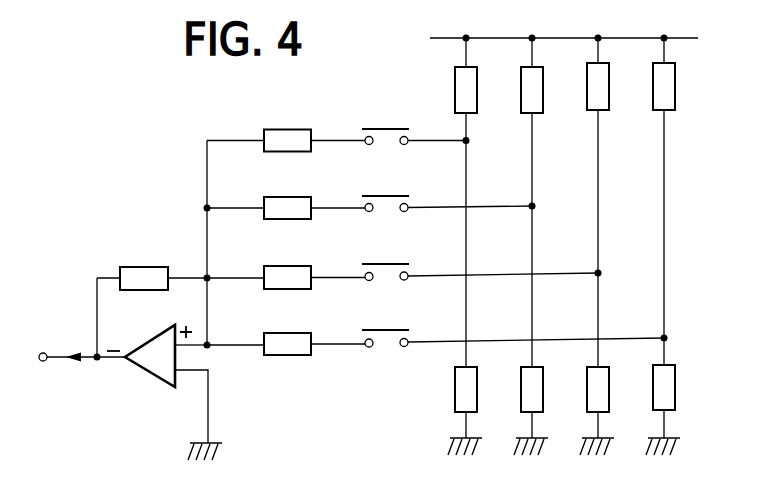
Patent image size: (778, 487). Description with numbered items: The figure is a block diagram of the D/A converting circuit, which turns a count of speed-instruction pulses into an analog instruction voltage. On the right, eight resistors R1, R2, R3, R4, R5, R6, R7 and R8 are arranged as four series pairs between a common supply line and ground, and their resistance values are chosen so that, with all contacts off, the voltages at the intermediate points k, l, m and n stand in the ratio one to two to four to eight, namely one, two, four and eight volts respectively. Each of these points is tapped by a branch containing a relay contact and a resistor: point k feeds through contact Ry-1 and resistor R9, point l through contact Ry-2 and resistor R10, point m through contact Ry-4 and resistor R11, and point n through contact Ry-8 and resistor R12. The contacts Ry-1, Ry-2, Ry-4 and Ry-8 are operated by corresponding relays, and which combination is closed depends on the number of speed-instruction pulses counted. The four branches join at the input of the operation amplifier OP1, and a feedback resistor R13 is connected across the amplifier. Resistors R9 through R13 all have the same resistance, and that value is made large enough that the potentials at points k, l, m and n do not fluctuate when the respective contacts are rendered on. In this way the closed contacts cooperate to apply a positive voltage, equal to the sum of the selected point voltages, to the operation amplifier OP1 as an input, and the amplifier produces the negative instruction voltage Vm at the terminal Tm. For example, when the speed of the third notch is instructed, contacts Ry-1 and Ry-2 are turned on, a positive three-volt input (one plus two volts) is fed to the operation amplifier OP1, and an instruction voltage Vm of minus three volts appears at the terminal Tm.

The resistor R1 is at (451, 90).
The resistor R2 is at (451, 389).
The resistor R3 is at (517, 90).
The resistor R4 is at (517, 389).
The resistor R5 is at (582, 86).
The resistor R6 is at (583, 389).
The resistor R7 is at (648, 86).
The resistor R8 is at (648, 387).
The resistor R9 is at (286, 129).
The resistor R10 is at (286, 196).
The resistor R11 is at (286, 266).
The resistor R12 is at (286, 332).
The resistor R13 is at (152, 300).
The contact Ry-1 is at (384, 123).
The contact Ry-2 is at (384, 190).
The contact Ry-4 is at (384, 259).
The contact Ry-8 is at (384, 325).
The operation amplifier OP1 is at (164, 392).
The instruction voltage Vm is at (86, 343).
The terminal Tm is at (42, 372).
The point k is at (446, 141).
The point l is at (477, 206).
The point m is at (516, 274).
The point n is at (545, 338).